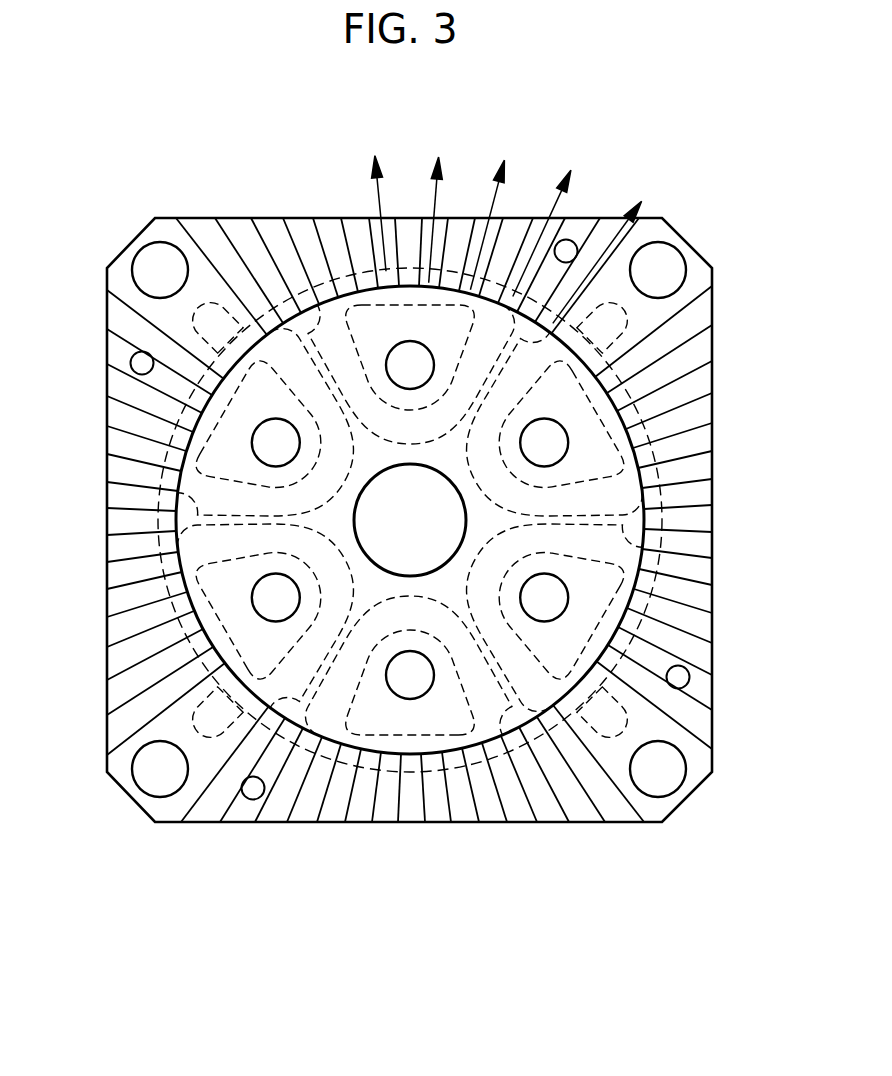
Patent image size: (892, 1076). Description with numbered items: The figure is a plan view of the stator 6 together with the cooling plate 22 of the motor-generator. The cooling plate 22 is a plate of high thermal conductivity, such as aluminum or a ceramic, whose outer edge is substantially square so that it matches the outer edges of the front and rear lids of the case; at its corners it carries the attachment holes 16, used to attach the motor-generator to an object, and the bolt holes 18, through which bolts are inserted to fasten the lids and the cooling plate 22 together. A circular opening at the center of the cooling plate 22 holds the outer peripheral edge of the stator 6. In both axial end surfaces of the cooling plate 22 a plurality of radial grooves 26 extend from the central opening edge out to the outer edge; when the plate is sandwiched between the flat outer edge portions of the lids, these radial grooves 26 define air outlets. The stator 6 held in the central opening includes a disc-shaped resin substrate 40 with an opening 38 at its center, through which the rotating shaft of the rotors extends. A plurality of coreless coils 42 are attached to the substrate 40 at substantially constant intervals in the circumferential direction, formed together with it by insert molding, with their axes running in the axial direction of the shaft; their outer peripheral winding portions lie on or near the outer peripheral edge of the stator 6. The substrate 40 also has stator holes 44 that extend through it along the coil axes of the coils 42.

The stator 6 is at (502, 776).
The attachment holes 16 is at (645, 253).
The bolt holes 18 is at (566, 243).
The cooling plate 22 is at (727, 293).
The radial grooves 26 is at (698, 378).
The opening 38 is at (410, 574).
The substrate 40 is at (177, 517).
The coreless coils 42 is at (177, 453).
The stator holes 44 is at (278, 422).